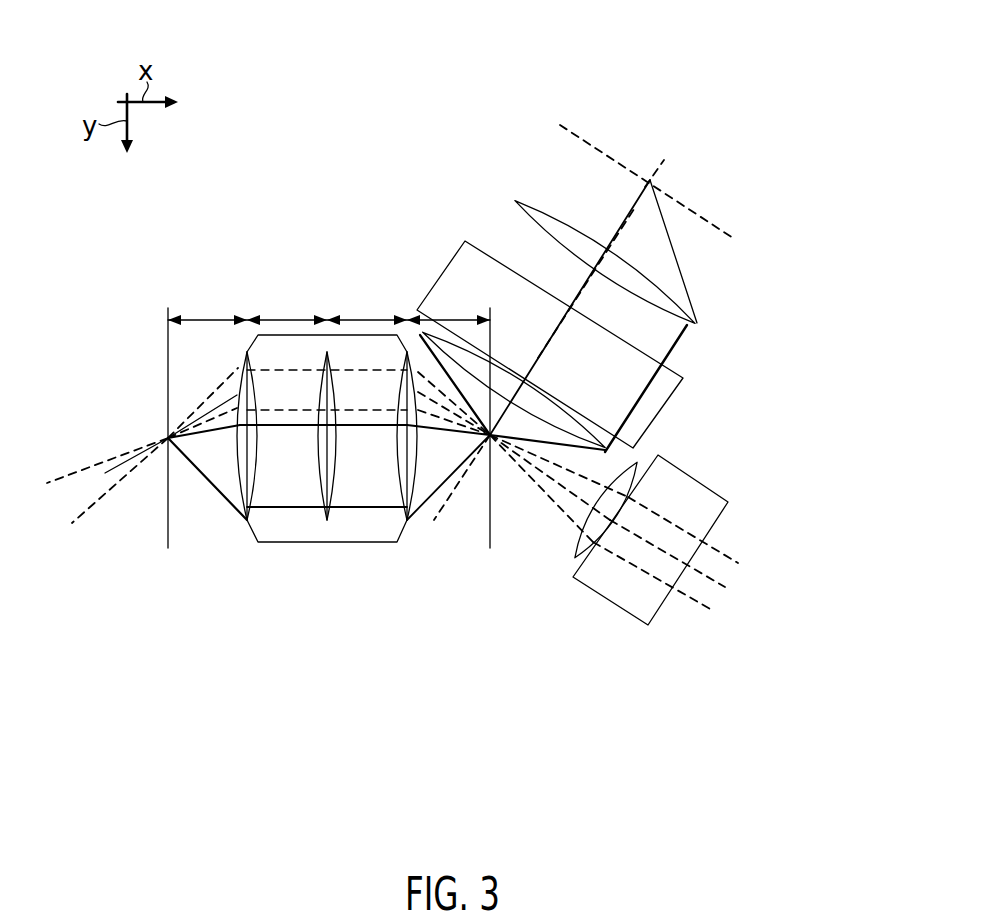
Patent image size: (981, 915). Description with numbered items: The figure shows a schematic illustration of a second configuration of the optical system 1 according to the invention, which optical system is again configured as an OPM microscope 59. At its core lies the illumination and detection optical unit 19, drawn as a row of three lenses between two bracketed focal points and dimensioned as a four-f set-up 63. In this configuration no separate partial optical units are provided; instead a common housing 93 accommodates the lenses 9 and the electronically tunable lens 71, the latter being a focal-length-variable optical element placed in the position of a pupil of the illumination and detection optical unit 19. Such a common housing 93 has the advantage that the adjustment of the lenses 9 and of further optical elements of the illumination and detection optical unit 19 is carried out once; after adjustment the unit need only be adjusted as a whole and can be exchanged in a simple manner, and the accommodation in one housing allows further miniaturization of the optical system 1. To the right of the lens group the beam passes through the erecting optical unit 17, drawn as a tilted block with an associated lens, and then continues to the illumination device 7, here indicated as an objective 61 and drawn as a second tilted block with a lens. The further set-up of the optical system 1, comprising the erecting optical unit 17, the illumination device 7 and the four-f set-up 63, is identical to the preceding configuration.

The optical system 1 is at (286, 60).
The OPM microscope 59 is at (310, 88).
The 4f set-up 63 is at (496, 301).
The lens 9 is at (228, 498).
The electronically tunable lens 71 is at (307, 490).
The common housing 93 is at (370, 495).
The illumination and detection optical unit 19 is at (420, 552).
The erecting optical unit 17 is at (716, 328).
The illumination device 7 is at (645, 530).
The objective 61 is at (641, 449).